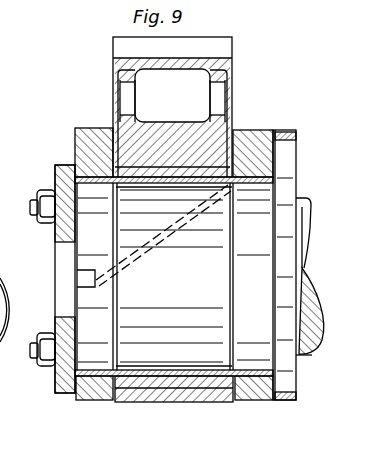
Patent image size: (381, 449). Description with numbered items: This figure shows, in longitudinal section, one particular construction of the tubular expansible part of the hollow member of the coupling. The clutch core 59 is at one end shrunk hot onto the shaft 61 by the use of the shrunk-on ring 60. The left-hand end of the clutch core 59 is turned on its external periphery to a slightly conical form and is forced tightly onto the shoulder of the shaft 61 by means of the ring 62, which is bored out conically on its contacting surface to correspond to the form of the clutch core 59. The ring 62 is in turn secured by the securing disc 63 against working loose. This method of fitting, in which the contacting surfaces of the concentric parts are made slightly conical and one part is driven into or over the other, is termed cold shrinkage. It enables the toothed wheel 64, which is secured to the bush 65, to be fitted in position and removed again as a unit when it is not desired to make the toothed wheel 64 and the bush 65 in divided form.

The clutch core 59 is at (134, 376).
The shrunk-on ring 60 is at (250, 137).
The shaft 61 is at (253, 350).
The ring 62 is at (92, 138).
The securing disc 63 is at (65, 235).
The toothed wheel 64 is at (233, 70).
The bush 65 is at (133, 173).